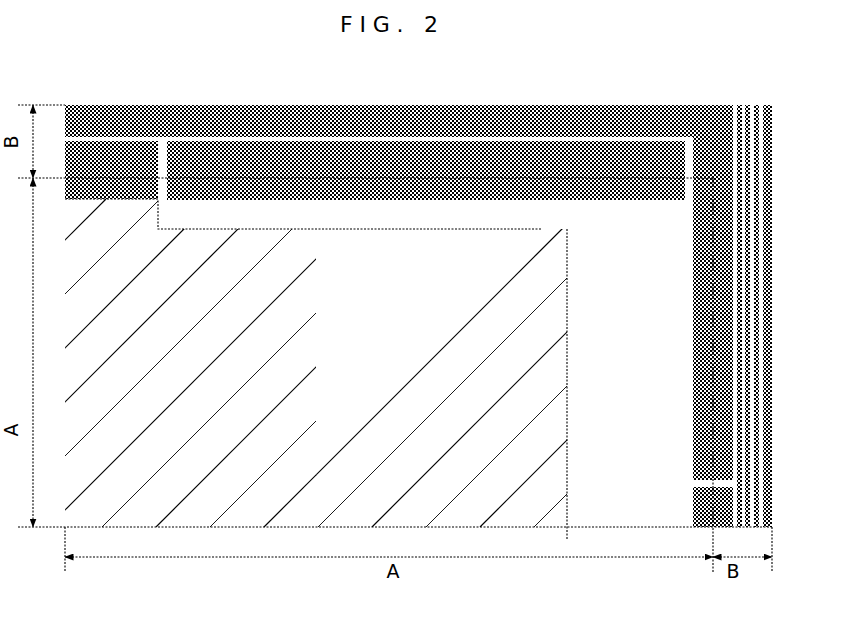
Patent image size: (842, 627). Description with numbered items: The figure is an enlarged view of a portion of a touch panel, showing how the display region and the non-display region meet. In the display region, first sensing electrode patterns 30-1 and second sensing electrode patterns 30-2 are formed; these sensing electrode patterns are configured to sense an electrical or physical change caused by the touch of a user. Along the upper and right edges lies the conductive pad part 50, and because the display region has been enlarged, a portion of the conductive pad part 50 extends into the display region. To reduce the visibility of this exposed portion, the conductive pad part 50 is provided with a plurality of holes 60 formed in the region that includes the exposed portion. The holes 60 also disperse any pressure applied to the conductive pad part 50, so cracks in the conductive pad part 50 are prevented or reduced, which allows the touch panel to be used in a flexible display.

The conductive pad part 50 is at (95, 148).
The holes 60 is at (148, 165).
The first sensing electrode patterns 30-1 is at (170, 475).
The second sensing electrode patterns 30-2 is at (490, 473).